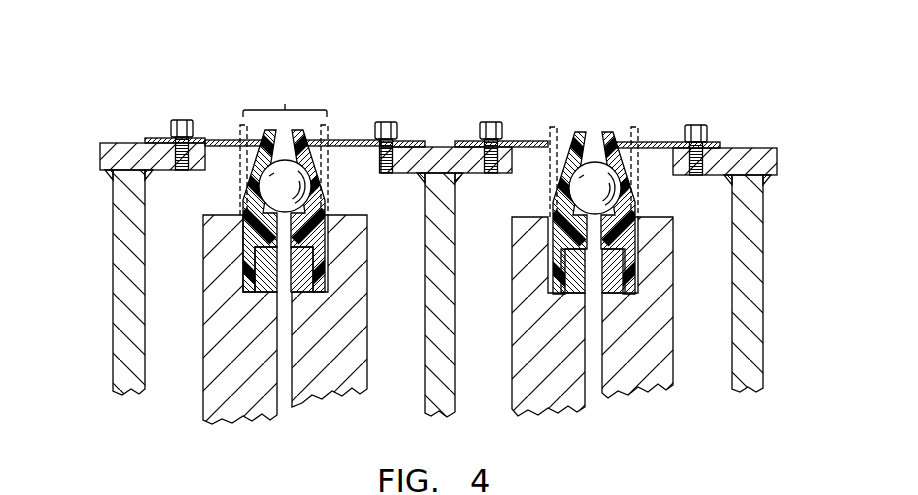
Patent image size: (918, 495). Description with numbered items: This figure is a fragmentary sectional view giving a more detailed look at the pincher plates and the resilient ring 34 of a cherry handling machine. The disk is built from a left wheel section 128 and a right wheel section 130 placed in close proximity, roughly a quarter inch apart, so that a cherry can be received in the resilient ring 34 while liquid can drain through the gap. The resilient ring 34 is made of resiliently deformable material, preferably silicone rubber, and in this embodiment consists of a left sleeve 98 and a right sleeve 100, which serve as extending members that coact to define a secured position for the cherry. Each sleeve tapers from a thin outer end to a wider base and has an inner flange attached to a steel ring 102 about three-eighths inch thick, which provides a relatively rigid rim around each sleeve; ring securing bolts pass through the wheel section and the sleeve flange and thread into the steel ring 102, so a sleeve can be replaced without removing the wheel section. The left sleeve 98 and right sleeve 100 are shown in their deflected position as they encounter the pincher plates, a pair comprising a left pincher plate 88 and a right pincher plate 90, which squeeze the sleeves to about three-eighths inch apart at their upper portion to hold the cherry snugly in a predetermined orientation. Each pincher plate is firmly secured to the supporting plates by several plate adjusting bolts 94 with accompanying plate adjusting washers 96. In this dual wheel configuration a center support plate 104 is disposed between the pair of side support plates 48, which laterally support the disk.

The resilient ring 34 is at (288, 164).
The side support plate 48 is at (110, 294).
The left pincher plate 88 is at (220, 139).
The right pincher plate 90 is at (344, 139).
The plate adjusting bolt 94 is at (184, 119).
The plate adjusting washer 96 is at (163, 136).
The left sleeve 98 is at (247, 207).
The right sleeve 100 is at (321, 207).
The steel ring 102 is at (250, 265).
The center support plate 104 is at (460, 297).
The left wheel section 128 is at (218, 375).
The right wheel section 130 is at (338, 378).